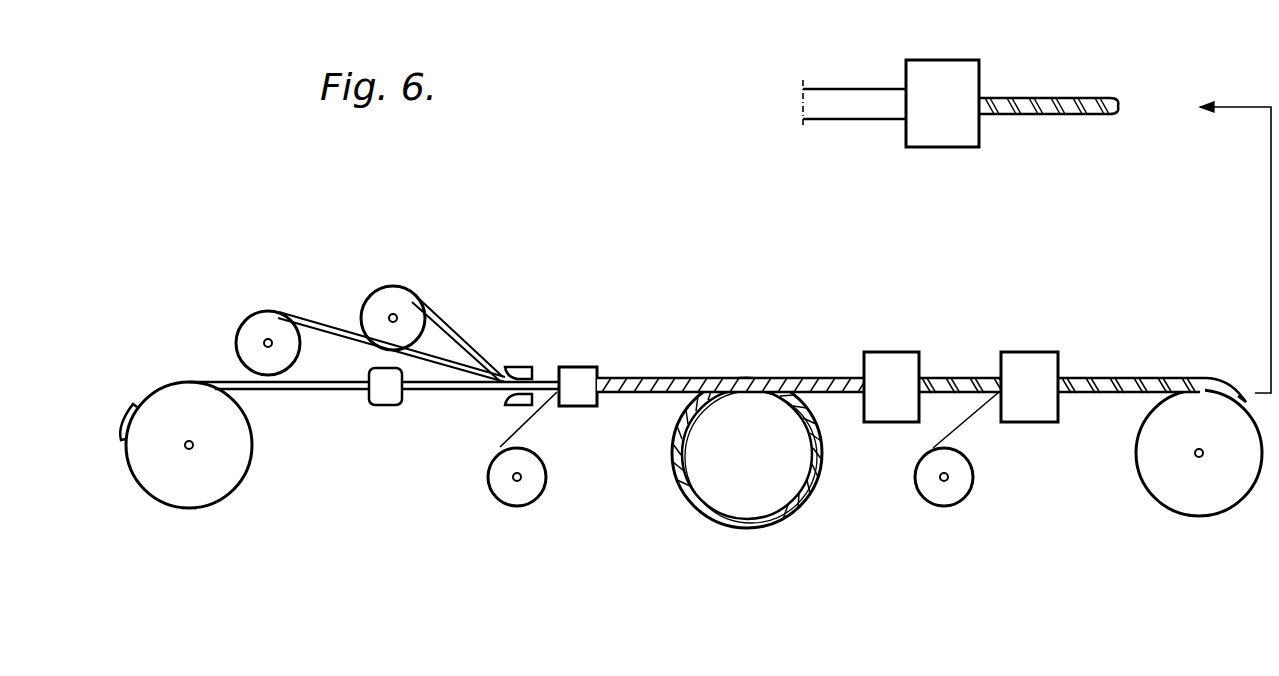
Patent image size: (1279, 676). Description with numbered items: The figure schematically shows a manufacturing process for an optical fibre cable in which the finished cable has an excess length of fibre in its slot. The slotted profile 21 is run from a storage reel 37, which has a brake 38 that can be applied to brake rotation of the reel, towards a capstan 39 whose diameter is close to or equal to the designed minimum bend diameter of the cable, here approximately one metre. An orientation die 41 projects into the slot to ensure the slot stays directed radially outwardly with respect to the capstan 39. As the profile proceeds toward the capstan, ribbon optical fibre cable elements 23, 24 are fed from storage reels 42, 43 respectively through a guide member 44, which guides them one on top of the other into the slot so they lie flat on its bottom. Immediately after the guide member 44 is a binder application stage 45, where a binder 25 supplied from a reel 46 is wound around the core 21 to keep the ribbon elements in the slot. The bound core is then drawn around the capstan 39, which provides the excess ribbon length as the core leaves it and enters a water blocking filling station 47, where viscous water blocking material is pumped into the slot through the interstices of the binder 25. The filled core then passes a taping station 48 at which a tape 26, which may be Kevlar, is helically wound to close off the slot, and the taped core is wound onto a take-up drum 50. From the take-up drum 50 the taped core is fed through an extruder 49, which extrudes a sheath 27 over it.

The profile 21 is at (327, 385).
The ribbon optical fibre cable element 23 is at (439, 317).
The ribbon optical fibre cable element 24 is at (323, 325).
The binder 25 is at (655, 387).
The tape 26 is at (958, 420).
The sheath 27 is at (846, 102).
The storage reel 37 is at (243, 455).
The brake 38 is at (136, 405).
The capstan 39 is at (705, 465).
The orientation die 41 is at (385, 397).
The storage reel 42 is at (382, 305).
The storage reel 43 is at (260, 337).
The guide member 44 is at (517, 370).
The binder application stage 45 is at (573, 377).
The reel 46 is at (502, 470).
The water blocking filling station 47 is at (888, 372).
The taping station 48 is at (1022, 363).
The extruder 49 is at (942, 103).
The take-up drum 50 is at (1160, 463).